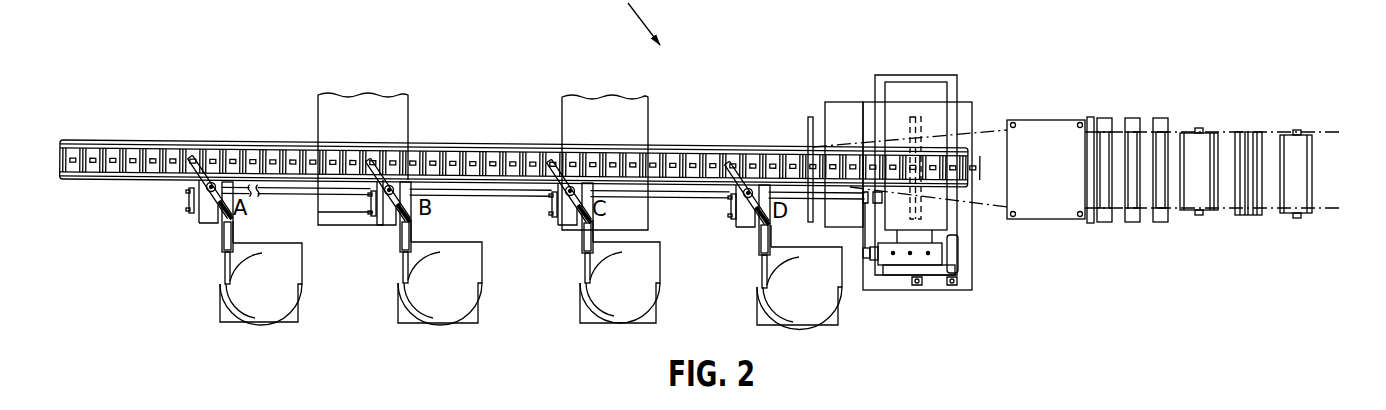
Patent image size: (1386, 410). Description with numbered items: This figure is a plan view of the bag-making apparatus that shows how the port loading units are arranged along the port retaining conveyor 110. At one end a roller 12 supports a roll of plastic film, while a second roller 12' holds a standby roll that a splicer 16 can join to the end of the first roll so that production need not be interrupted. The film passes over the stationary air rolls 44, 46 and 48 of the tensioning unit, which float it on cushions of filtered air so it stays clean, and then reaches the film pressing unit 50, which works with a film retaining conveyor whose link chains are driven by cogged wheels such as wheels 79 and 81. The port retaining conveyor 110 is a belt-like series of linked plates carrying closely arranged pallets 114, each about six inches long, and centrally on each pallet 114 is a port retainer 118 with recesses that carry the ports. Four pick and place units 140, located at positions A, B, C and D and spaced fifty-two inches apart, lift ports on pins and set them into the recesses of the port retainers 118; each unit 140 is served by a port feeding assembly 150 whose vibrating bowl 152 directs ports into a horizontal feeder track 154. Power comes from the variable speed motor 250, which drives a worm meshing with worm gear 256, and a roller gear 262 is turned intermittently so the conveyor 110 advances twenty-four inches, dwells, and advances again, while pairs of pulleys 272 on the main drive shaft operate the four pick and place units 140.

The roller 12 is at (1311, 154).
The roller 12' is at (1210, 151).
The splicer 16 is at (1252, 122).
The stationary air roll 44 is at (1161, 119).
The stationary air roll 46 is at (1132, 119).
The stationary air roll 48 is at (1105, 119).
The film pressing unit 50 is at (1052, 228).
The cogged wheel 79 is at (810, 117).
The cogged wheel 81 is at (1091, 117).
The port retaining conveyor 110 is at (967, 147).
The pallet 114 is at (452, 152).
The port retainer 118 is at (513, 155).
The pick and place unit 140 is at (235, 215).
The port feeding assembly 150 is at (258, 324).
The vibrating bowl 152 is at (286, 310).
The horizontal feeder track 154 is at (398, 245).
The variable speed motor 250 is at (907, 270).
The worm gear 256 is at (957, 255).
The roller gear 262 is at (918, 262).
The pulleys 272 is at (188, 192).